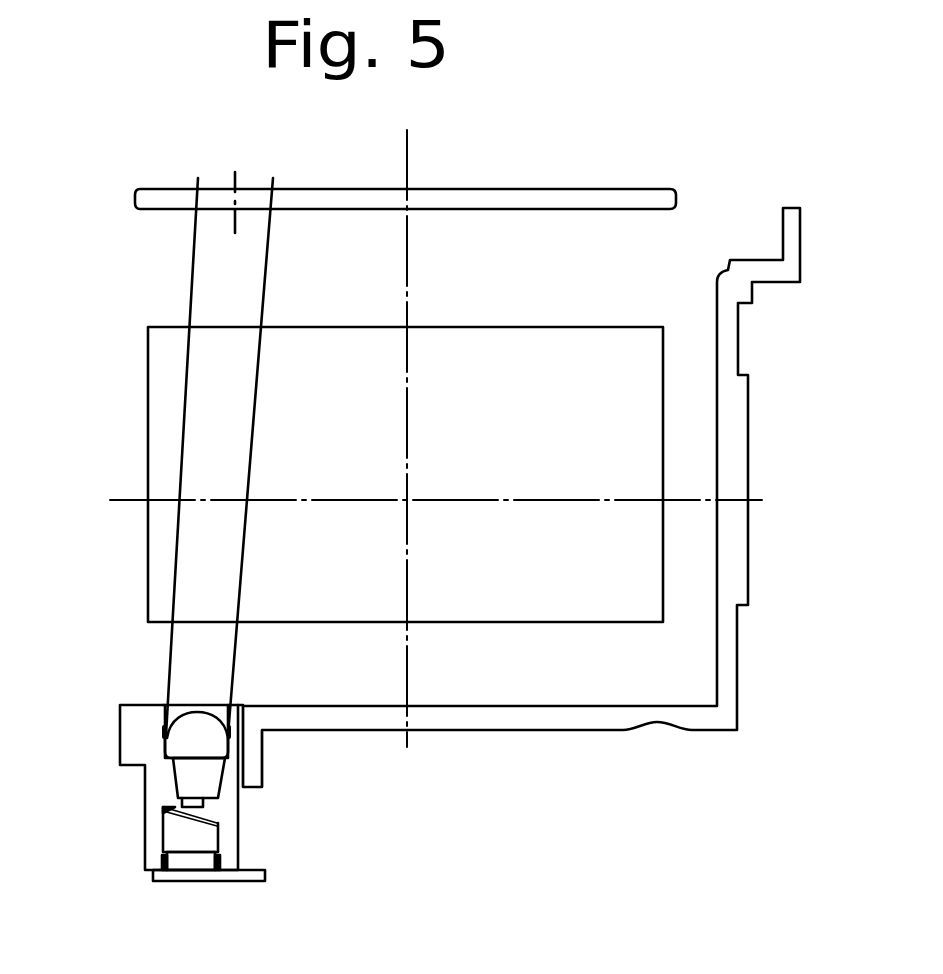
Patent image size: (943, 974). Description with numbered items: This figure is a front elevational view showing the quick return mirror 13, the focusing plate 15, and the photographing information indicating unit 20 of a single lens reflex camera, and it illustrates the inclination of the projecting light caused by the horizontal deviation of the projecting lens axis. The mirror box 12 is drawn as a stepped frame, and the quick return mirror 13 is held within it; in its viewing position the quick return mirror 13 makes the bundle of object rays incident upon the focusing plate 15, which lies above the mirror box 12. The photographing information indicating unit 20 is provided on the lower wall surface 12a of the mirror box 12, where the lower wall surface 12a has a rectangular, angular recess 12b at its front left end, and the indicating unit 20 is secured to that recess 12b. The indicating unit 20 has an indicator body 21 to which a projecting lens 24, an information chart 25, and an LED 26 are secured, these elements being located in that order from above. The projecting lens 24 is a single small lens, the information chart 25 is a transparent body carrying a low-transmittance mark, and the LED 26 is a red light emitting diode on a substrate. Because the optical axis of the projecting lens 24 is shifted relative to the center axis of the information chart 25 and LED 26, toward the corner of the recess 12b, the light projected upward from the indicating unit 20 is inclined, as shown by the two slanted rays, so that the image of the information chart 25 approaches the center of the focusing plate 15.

The mirror box 12 is at (752, 395).
The lower wall surface 12a is at (450, 727).
The rectangular recess 12b is at (240, 740).
The quick return mirror 13 is at (599, 338).
The focusing plate 15 is at (608, 193).
The photographing information indicating unit 20 is at (139, 852).
The indicator body 21 is at (130, 750).
The projecting lens 24 is at (182, 730).
The information chart 25 is at (185, 818).
The LED 26 is at (195, 862).